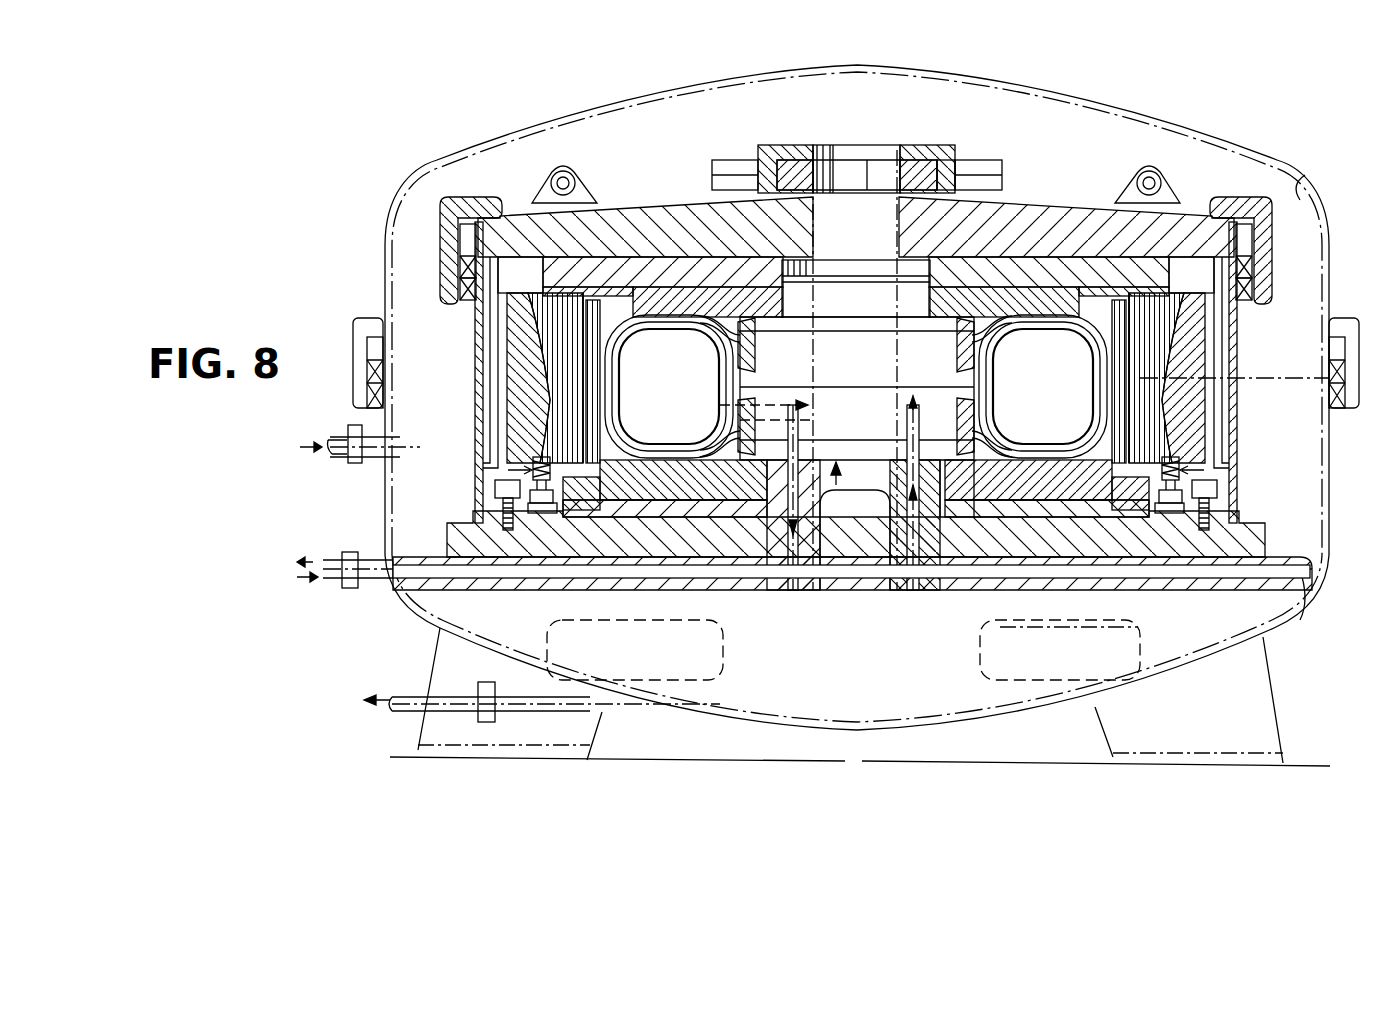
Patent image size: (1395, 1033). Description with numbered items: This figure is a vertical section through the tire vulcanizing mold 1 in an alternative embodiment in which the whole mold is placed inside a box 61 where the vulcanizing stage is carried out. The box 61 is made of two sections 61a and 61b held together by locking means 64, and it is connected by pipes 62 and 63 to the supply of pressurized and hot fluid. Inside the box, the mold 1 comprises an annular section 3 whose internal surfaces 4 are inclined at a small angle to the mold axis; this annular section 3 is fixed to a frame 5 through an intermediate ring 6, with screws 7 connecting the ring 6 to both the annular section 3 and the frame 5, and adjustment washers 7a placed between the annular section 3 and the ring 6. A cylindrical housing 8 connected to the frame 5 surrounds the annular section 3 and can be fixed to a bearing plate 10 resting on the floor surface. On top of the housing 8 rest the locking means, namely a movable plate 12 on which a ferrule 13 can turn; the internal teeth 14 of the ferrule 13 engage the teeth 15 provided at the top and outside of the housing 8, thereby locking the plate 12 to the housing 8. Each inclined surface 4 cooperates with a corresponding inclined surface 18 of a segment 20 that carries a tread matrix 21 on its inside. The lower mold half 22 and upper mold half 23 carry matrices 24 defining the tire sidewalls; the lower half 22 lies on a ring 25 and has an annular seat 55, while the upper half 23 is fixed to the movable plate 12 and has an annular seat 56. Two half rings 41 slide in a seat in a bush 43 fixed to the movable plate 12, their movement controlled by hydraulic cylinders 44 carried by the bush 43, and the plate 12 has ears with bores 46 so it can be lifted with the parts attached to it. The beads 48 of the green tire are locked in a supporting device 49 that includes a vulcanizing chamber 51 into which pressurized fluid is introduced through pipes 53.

The mold 1 is at (440, 185).
The annular section 3 is at (522, 396).
The internal surfaces 4 is at (560, 343).
The frame 5 is at (645, 540).
The intermediate ring 6 is at (580, 502).
The screws 7 is at (542, 515).
The adjustment washers 7a is at (505, 470).
The cylindrical housing 8 is at (1235, 378).
The bearing plate 10 is at (608, 578).
The movable plate 12 is at (1036, 228).
The ferrule 13 is at (465, 212).
The internal teeth 14 is at (470, 292).
The teeth 15 is at (466, 268).
The inclined surface 18 is at (568, 357).
The segment 20 is at (560, 310).
The matrix 21 is at (596, 432).
The lower mold half 22 is at (962, 500).
The upper mold half 23 is at (990, 313).
The matrices 24 is at (655, 326).
The ring 25 is at (660, 488).
The half rings 41 is at (800, 165).
The bush 43 is at (947, 160).
The hydraulic cylinders 44 is at (740, 168).
The ears with bores 46 is at (540, 197).
The beads 48 is at (735, 342).
The supporting device 49 is at (853, 525).
The vulcanizing chamber 51 is at (625, 350).
The pipes 53 is at (912, 430).
The annular seat 55 is at (766, 452).
The annular seat 56 is at (760, 318).
The box 61 is at (408, 155).
The box section 61a is at (1305, 175).
The box section 61b is at (1300, 620).
The pipe 62 is at (330, 558).
The pipe 63 is at (350, 433).
The locking means 64 is at (310, 312).